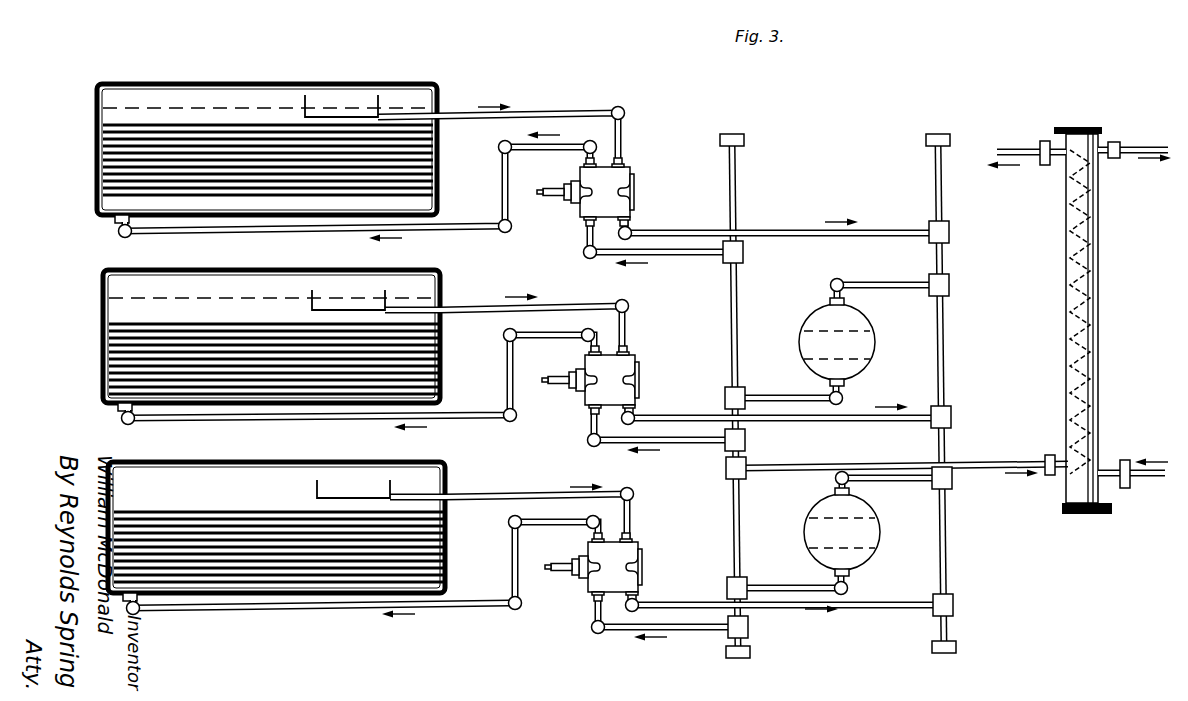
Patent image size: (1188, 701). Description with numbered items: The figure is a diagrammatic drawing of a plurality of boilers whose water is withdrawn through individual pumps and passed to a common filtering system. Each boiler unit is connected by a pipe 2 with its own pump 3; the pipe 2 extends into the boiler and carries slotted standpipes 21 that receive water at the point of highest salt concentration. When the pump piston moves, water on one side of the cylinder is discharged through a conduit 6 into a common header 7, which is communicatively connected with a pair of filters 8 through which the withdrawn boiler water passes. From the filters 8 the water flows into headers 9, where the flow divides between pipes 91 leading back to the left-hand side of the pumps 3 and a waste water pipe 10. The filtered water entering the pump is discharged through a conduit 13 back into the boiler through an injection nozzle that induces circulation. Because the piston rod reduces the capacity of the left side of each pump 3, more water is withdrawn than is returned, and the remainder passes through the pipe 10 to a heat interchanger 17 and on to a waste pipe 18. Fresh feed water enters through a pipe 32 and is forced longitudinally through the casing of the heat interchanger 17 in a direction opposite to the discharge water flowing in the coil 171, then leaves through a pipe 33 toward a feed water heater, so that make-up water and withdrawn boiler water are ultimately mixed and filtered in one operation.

The pipe 2 is at (520, 113).
The slotted standpipes 21 is at (340, 86).
The pump 3 is at (636, 188).
The conduit 6 is at (789, 229).
The header 7 is at (946, 195).
The filters 8 is at (839, 437).
The headers 9 is at (728, 300).
The pipes 91 is at (688, 257).
The waste water pipe 10 is at (978, 465).
The conduit 13 is at (503, 178).
The heat interchanger 17 is at (1099, 285).
The coil 171 is at (1104, 352).
The waste pipe 18 is at (1130, 150).
The pipe 32 is at (1148, 485).
The pipe 33 is at (1012, 150).